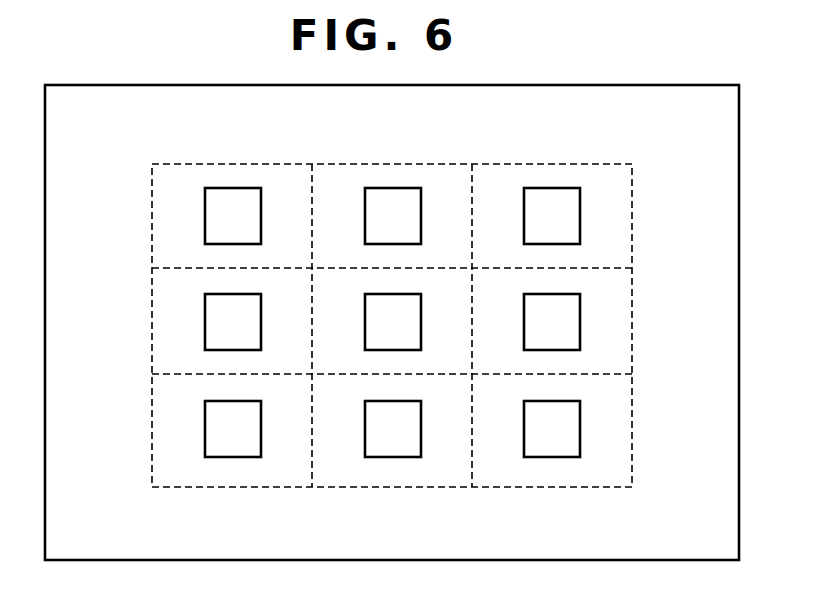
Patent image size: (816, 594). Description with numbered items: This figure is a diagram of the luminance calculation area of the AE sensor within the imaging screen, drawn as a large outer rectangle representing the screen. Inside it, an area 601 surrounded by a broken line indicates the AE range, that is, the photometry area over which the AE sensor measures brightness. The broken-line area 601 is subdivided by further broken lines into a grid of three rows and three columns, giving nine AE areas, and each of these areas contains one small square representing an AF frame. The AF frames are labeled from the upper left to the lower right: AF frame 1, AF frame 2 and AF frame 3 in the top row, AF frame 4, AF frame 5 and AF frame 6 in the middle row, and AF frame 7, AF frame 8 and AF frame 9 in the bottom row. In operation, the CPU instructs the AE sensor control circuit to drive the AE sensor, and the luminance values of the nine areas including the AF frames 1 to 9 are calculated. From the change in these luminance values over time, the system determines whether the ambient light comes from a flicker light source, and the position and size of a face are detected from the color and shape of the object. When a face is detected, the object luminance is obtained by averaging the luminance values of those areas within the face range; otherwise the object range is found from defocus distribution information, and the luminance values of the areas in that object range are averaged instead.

The area surrounded by a broken line 601 is at (602, 163).
The AF frame 1 is at (259, 188).
The AF frame 2 is at (419, 188).
The AF frame 3 is at (578, 188).
The AF frame 4 is at (259, 294).
The AF frame 5 is at (419, 294).
The AF frame 6 is at (578, 294).
The AF frame 7 is at (259, 401).
The AF frame 8 is at (419, 401).
The AF frame 9 is at (578, 401).